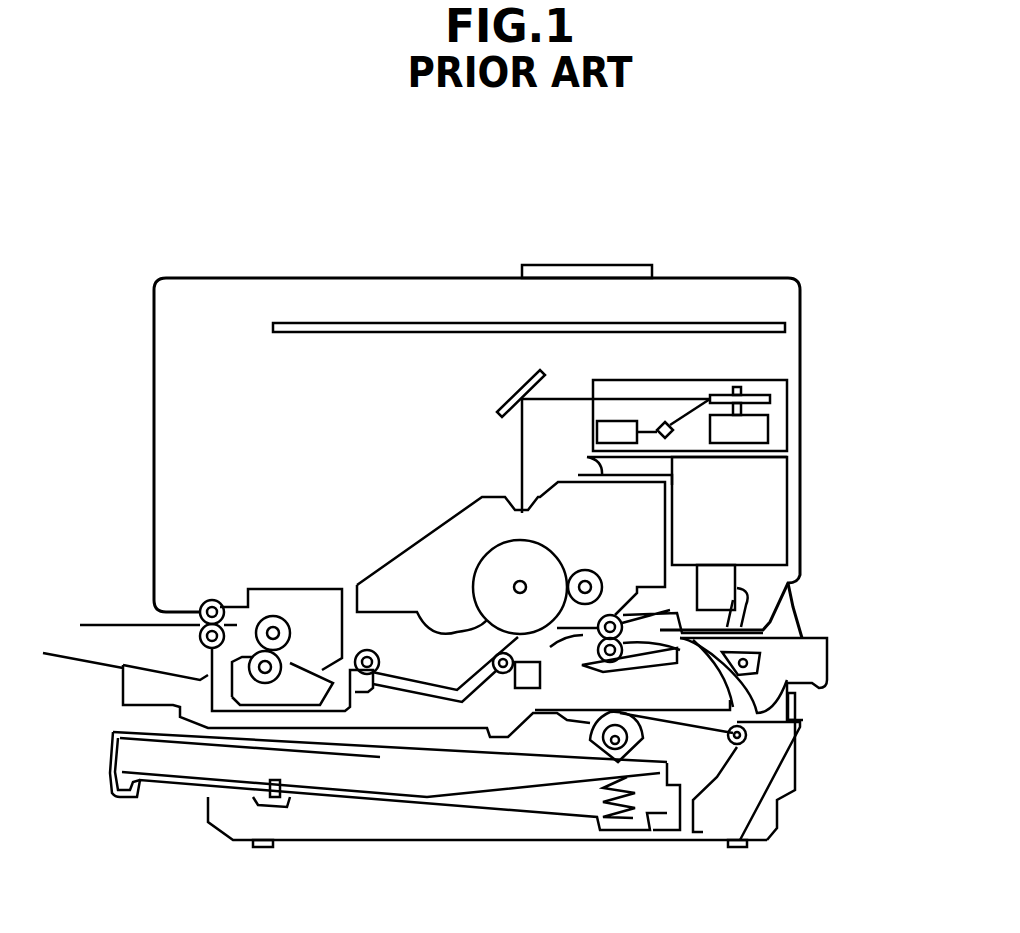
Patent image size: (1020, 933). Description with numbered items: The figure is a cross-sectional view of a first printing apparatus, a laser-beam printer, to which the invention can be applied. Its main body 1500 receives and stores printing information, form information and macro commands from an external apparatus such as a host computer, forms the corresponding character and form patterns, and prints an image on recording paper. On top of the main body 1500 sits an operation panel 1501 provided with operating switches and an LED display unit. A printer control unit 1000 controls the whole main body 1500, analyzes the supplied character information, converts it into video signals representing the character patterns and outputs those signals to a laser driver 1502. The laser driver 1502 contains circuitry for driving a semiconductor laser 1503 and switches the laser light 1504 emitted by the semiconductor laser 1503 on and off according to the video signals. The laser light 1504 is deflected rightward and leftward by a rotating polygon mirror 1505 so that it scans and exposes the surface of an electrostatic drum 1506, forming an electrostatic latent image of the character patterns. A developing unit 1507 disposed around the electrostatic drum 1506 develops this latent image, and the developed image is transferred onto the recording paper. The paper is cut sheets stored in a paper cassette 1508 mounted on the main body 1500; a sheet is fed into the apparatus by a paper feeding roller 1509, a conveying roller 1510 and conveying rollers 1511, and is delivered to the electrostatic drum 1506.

The printer control unit 1000 is at (765, 325).
The main body 1500 is at (727, 278).
The operation panel 1501 is at (597, 265).
The laser driver 1502 is at (597, 432).
The semiconductor laser 1503 is at (667, 438).
The laser light 1504 is at (673, 400).
The rotating polygon mirror 1505 is at (783, 398).
The electrostatic drum 1506 is at (480, 557).
The developing unit 1507 is at (397, 578).
The paper cassette 1508 is at (105, 777).
The paper feeding roller 1509 is at (602, 713).
The conveying roller 1510 is at (728, 748).
The conveying rollers 1511 is at (600, 677).